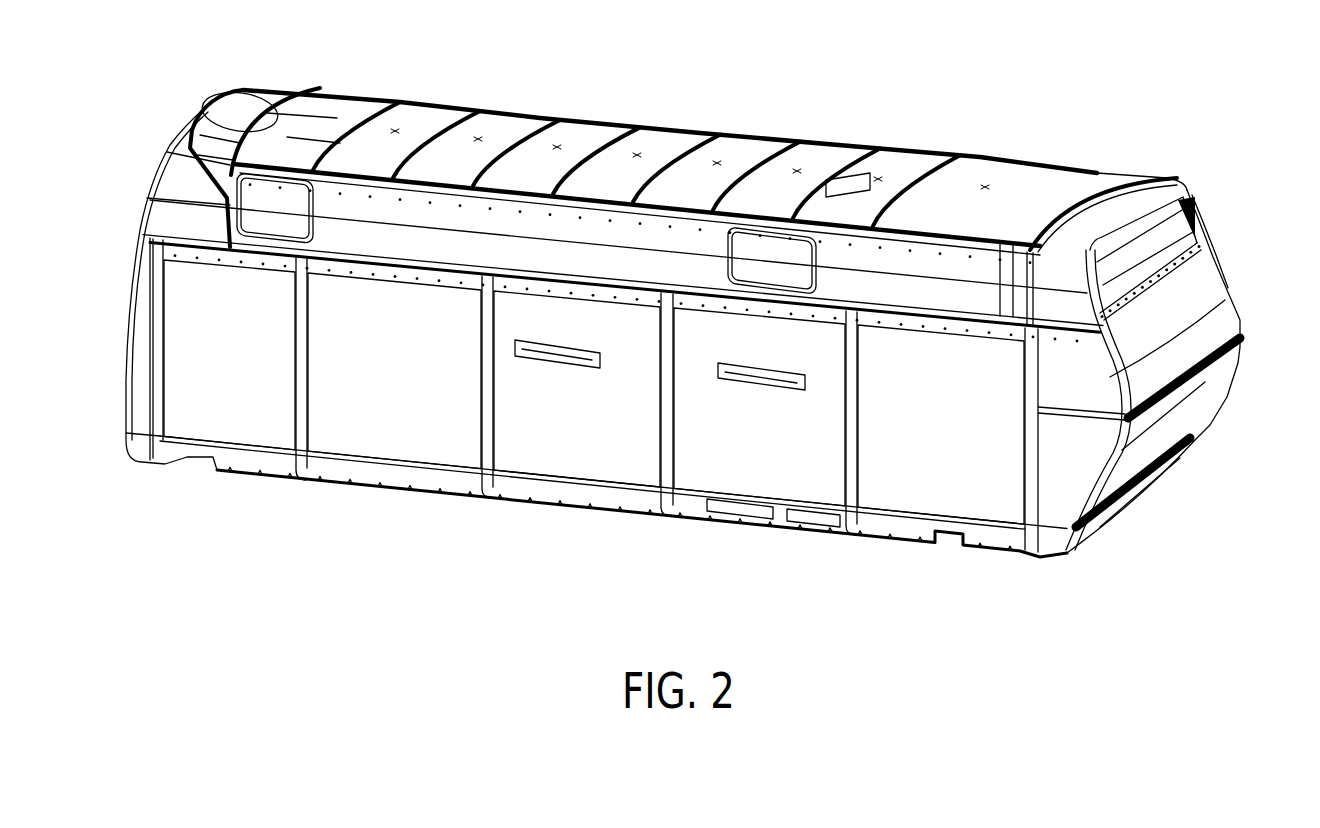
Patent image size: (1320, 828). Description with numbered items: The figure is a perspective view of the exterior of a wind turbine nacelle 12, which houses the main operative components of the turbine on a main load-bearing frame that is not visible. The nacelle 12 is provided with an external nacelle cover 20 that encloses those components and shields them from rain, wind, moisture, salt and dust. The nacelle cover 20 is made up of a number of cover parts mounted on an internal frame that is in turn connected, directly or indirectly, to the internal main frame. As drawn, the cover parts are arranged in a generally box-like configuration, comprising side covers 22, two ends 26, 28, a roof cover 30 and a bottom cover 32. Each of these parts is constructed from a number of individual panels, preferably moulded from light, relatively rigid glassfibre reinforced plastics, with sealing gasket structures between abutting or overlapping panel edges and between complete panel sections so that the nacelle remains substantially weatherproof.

The wind turbine nacelle 12 is at (1020, 115).
The external nacelle cover 20 is at (1140, 190).
The side covers 22 is at (990, 500).
The end 26 is at (118, 373).
The end 28 is at (1212, 285).
The roof cover 30 is at (583, 128).
The bottom cover 32 is at (506, 520).